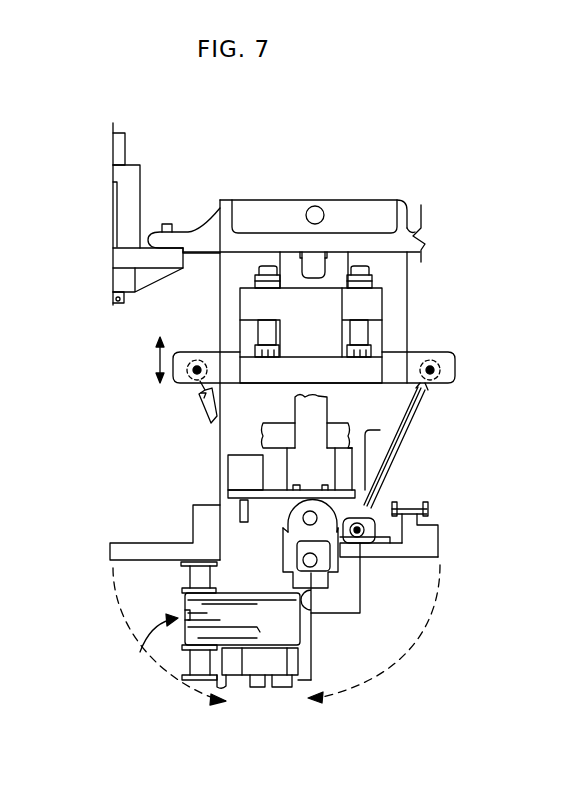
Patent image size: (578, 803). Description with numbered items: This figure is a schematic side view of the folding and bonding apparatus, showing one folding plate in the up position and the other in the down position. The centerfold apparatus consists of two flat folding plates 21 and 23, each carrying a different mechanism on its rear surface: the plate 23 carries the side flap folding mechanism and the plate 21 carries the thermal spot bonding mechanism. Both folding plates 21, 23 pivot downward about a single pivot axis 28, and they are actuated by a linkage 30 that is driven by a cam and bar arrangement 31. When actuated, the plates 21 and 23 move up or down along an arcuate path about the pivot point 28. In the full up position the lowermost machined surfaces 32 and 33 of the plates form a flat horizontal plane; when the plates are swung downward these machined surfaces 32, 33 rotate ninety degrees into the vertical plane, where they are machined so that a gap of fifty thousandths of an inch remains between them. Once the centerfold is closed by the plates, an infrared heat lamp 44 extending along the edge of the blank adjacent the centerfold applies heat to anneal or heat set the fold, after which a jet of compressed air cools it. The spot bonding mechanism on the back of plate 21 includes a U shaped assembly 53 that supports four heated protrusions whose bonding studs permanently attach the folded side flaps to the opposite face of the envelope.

The folding plate 21 is at (108, 546).
The folding plate 23 is at (440, 530).
The pivot axis 28 is at (316, 566).
The linkage 30 is at (207, 414).
The cam and bar arrangement 31 is at (192, 351).
The machined surface 32 is at (421, 560).
The machined surface 33 is at (142, 565).
The infrared heat lamp 44 is at (302, 517).
The U shaped assembly 53 is at (138, 655).